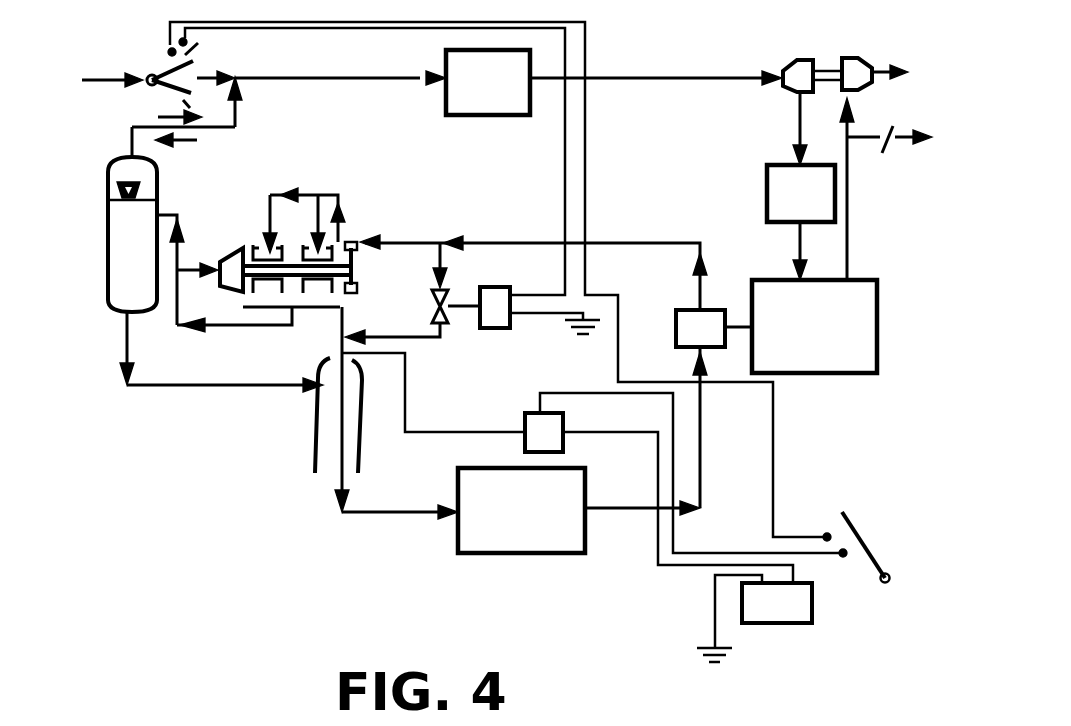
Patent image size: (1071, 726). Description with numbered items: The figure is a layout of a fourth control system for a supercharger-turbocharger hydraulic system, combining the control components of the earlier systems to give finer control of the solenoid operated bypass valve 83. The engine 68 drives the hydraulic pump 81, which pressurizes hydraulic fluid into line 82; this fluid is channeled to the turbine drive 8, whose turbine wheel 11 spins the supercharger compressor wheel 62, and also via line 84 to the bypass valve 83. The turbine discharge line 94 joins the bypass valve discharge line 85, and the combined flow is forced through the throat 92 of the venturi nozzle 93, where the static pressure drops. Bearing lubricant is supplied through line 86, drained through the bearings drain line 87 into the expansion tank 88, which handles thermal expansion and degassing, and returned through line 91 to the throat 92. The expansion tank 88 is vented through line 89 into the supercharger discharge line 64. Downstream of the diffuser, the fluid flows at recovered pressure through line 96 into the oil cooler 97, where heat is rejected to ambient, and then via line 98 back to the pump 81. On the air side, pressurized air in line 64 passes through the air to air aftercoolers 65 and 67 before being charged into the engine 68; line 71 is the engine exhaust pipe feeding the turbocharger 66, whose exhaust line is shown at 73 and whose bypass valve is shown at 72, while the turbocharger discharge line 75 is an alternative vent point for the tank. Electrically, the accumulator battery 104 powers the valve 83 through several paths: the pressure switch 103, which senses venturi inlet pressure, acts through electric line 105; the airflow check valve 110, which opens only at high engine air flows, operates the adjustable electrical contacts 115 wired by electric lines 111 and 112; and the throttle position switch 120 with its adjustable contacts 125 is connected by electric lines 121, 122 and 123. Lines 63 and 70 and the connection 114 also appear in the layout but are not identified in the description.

The turbine drive 8 is at (367, 275).
The turbine wheel 11 is at (363, 237).
The supercharger compressor wheel 62 is at (232, 255).
The fuel supply line from tank to compressor 63 is at (200, 273).
The supercharger discharge line 64 is at (238, 176).
The air to air aftercooler 65 is at (530, 58).
The turbocharger 66 is at (820, 66).
The air to air aftercooler 67 is at (767, 193).
The engine 68 is at (780, 375).
The compressed air line 70 is at (647, 73).
The engine exhaust pipe 71 is at (850, 185).
The turbocharger bypass valve 72 is at (895, 153).
The turbocharger exhaust line 73 is at (893, 57).
The turbocharger discharge line 75 is at (797, 245).
The hydraulic pump 81 is at (673, 317).
The line 82 is at (593, 240).
The solenoid operated bypass valve 83 is at (453, 308).
The line 84 is at (445, 258).
The bypass valve discharge line 85 is at (417, 340).
The line 86 is at (302, 190).
The bearings drain line 87 is at (233, 325).
The expansion tank 88 is at (105, 280).
The line 89 is at (132, 128).
The line 91 is at (232, 387).
The throat 92 is at (357, 387).
The venturi nozzle 93 is at (317, 453).
The turbine discharge line 94 is at (348, 220).
The line 96 is at (405, 513).
The oil cooler 97 is at (588, 533).
The line 98 is at (707, 443).
The pressure switch 103 is at (525, 420).
The accumulator battery 104 is at (777, 623).
The electric line 105 is at (590, 443).
The airflow check valve 110 is at (162, 65).
The electric line 111 is at (292, 24).
The electric line 112 is at (355, 30).
The solenoid ground wire 114 is at (523, 315).
The electrical contacts 115 is at (158, 36).
The throttle position switch 120 is at (862, 540).
The electric line 121 is at (580, 395).
The electric line 122 is at (775, 447).
The electric line 123 is at (713, 592).
The contacts 125 is at (845, 503).